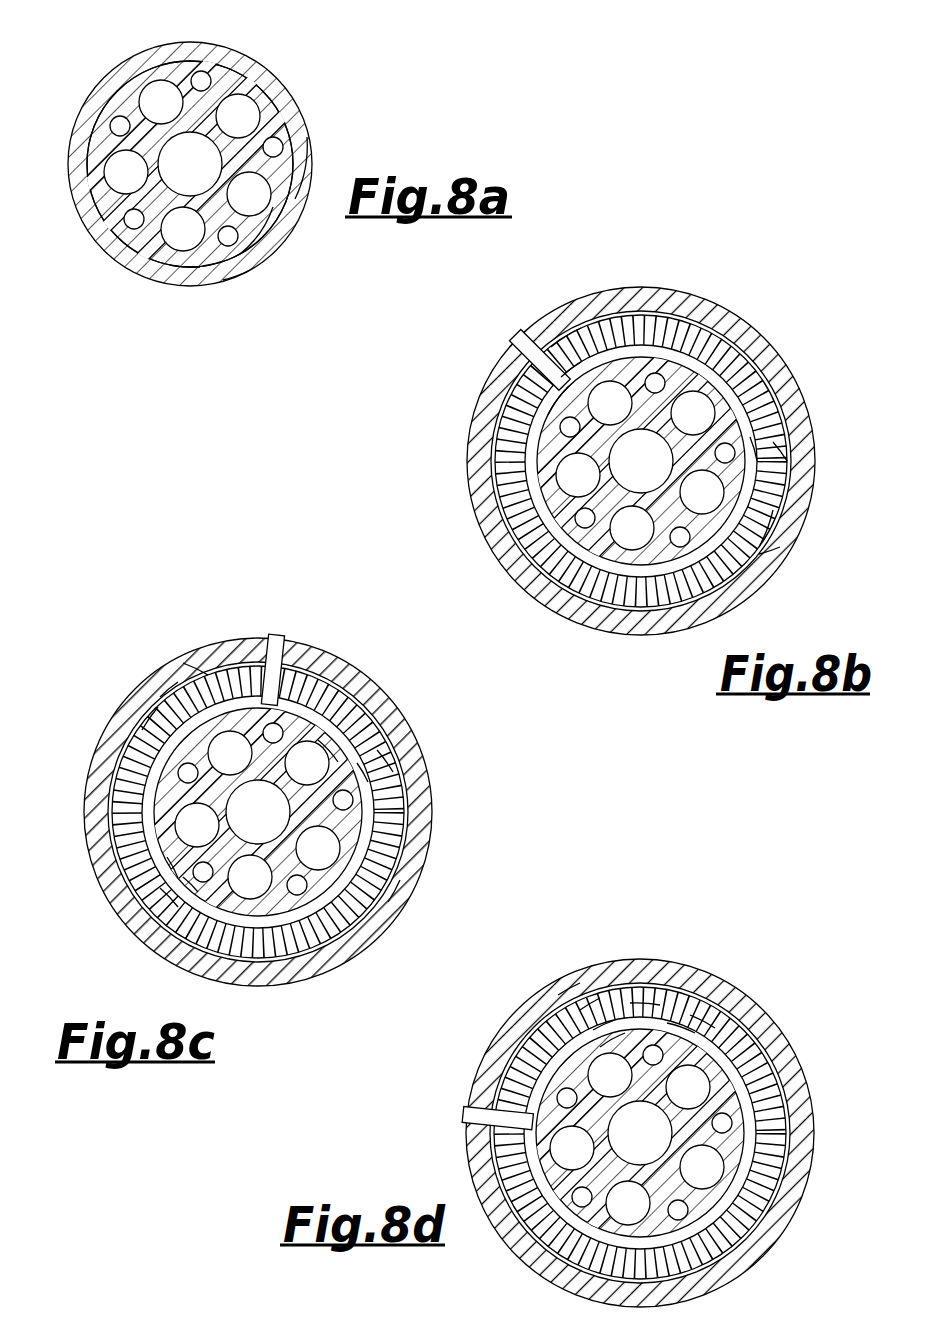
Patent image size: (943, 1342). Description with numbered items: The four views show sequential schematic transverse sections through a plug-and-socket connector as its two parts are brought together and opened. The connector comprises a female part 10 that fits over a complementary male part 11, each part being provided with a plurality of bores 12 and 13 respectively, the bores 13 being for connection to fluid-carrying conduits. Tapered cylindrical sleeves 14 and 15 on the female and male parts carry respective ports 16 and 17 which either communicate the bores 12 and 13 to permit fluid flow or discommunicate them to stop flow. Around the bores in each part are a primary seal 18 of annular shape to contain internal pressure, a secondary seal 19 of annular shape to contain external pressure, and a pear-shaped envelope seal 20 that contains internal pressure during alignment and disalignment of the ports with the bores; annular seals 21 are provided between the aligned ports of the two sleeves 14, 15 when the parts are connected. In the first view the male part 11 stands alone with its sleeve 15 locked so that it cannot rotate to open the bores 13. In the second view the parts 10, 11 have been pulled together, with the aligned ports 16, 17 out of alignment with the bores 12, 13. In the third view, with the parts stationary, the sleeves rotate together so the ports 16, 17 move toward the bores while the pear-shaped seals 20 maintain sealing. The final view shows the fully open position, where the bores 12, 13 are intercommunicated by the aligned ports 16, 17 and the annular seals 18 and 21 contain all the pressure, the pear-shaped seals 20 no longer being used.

In FIG. 8B, the female part 10 is at (641, 455).
In FIG. 8C, the female part 10 is at (255, 812).
In FIG. 8D, the female part 10 is at (662, 1133).
In FIG. 8A, the male part 11 is at (212, 155).
In FIG. 8B, the male part 11 is at (625, 496).
In FIG. 8C, the male part 11 is at (284, 827).
In FIG. 8D, the male part 11 is at (687, 1124).
In FIG. 8B, the bores 12 is at (800, 571).
In FIG. 8C, the bores 12 is at (428, 882).
In FIG. 8D, the bores 12 is at (570, 958).
In FIG. 8A, the bores 13 is at (292, 238).
In FIG. 8B, the bores 13 is at (803, 534).
In FIG. 8C, the bores 13 is at (357, 698).
In FIG. 8D, the bores 13 is at (663, 984).
In FIG. 8B, the tapered cylindrical sleeve 14 is at (653, 461).
In FIG. 8C, the tapered cylindrical sleeve 14 is at (257, 820).
In FIG. 8D, the tapered cylindrical sleeve 14 is at (675, 1133).
In FIG. 8A, the tapered cylindrical sleeve 15 is at (203, 164).
In FIG. 8B, the tapered cylindrical sleeve 15 is at (676, 461).
In FIG. 8C, the tapered cylindrical sleeve 15 is at (258, 845).
In FIG. 8D, the tapered cylindrical sleeve 15 is at (640, 1133).
In FIG. 8B, the ports 16 is at (817, 457).
In FIG. 8C, the ports 16 is at (416, 738).
In FIG. 8D, the ports 16 is at (604, 966).
In FIG. 8A, the ports 17 is at (332, 160).
In FIG. 8B, the ports 17 is at (806, 427).
In FIG. 8C, the ports 17 is at (413, 762).
In FIG. 8D, the ports 17 is at (641, 973).
In FIG. 8A, the primary seal 18 is at (187, 296).
In FIG. 8B, the primary seal 18 is at (566, 334).
In FIG. 8C, the primary seal 18 is at (145, 740).
In FIG. 8D, the primary seal 18 is at (740, 1009).
In FIG. 8A, the secondary seal 19 is at (230, 291).
In FIG. 8B, the secondary seal 19 is at (551, 345).
In FIG. 8C, the secondary seal 19 is at (132, 752).
In FIG. 8D, the secondary seal 19 is at (744, 992).
In FIG. 8A, the pear-shaped envelope seal 20 is at (257, 282).
In FIG. 8B, the pear-shaped envelope seal 20 is at (530, 358).
In FIG. 8C, the pear-shaped envelope seal 20 is at (122, 782).
In FIG. 8D, the pear-shaped envelope seal 20 is at (696, 971).
In FIG. 8B, the annular seals 21 is at (518, 369).
In FIG. 8C, the annular seals 21 is at (294, 648).
In FIG. 8D, the annular seals 21 is at (477, 1118).